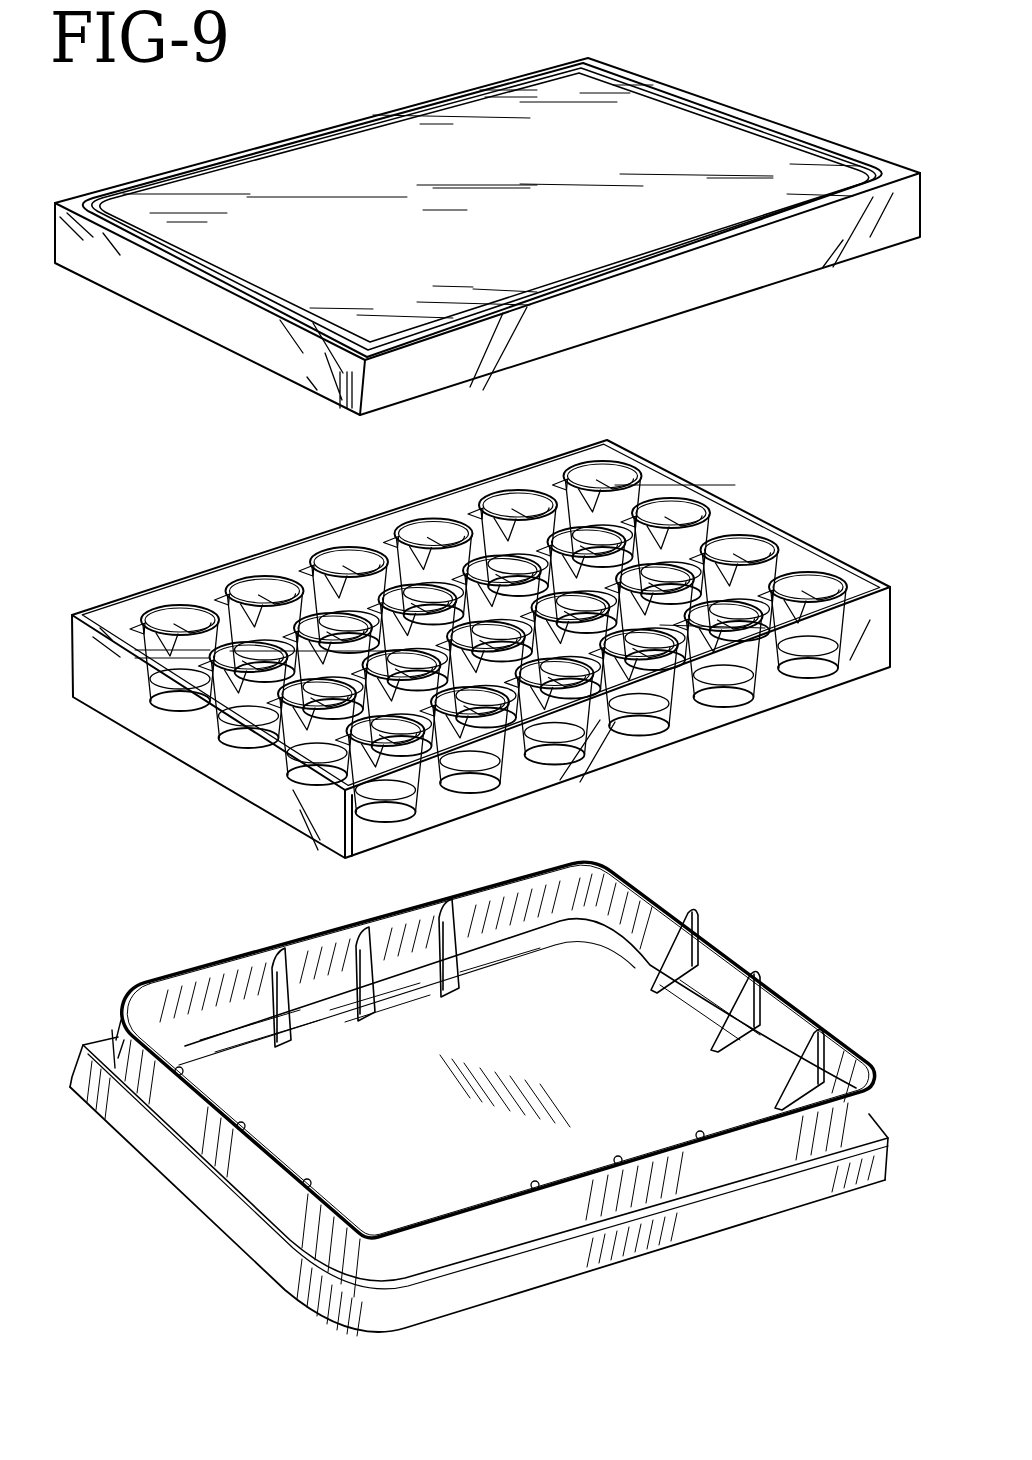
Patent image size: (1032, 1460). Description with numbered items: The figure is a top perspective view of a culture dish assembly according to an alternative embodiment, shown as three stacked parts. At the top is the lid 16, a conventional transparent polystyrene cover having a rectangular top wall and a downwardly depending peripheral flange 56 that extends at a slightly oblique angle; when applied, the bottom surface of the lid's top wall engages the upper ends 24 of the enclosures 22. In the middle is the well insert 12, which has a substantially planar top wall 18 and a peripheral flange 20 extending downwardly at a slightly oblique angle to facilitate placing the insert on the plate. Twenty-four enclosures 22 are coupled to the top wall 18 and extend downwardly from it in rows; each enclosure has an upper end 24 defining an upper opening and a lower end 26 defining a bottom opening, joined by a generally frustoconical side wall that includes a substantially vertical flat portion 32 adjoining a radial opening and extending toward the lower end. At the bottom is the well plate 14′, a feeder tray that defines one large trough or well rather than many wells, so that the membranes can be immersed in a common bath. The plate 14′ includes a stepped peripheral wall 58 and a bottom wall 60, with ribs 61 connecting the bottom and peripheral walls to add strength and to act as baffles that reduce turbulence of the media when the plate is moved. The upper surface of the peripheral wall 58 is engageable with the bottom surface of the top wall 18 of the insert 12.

The well insert 12 is at (223, 564).
The well plate 14′ is at (196, 963).
The lid 16 is at (222, 343).
The top wall 18 is at (365, 535).
The peripheral flange 20 is at (255, 777).
The enclosures 22 is at (742, 546).
The upper end 24 is at (272, 573).
The lower end 26 is at (233, 742).
The substantially vertical flat portion 32 is at (393, 553).
The peripheral flange 56 is at (185, 302).
The stepped peripheral wall 58 is at (121, 1032).
The bottom wall 60 is at (566, 1045).
The ribs 61 is at (357, 959).